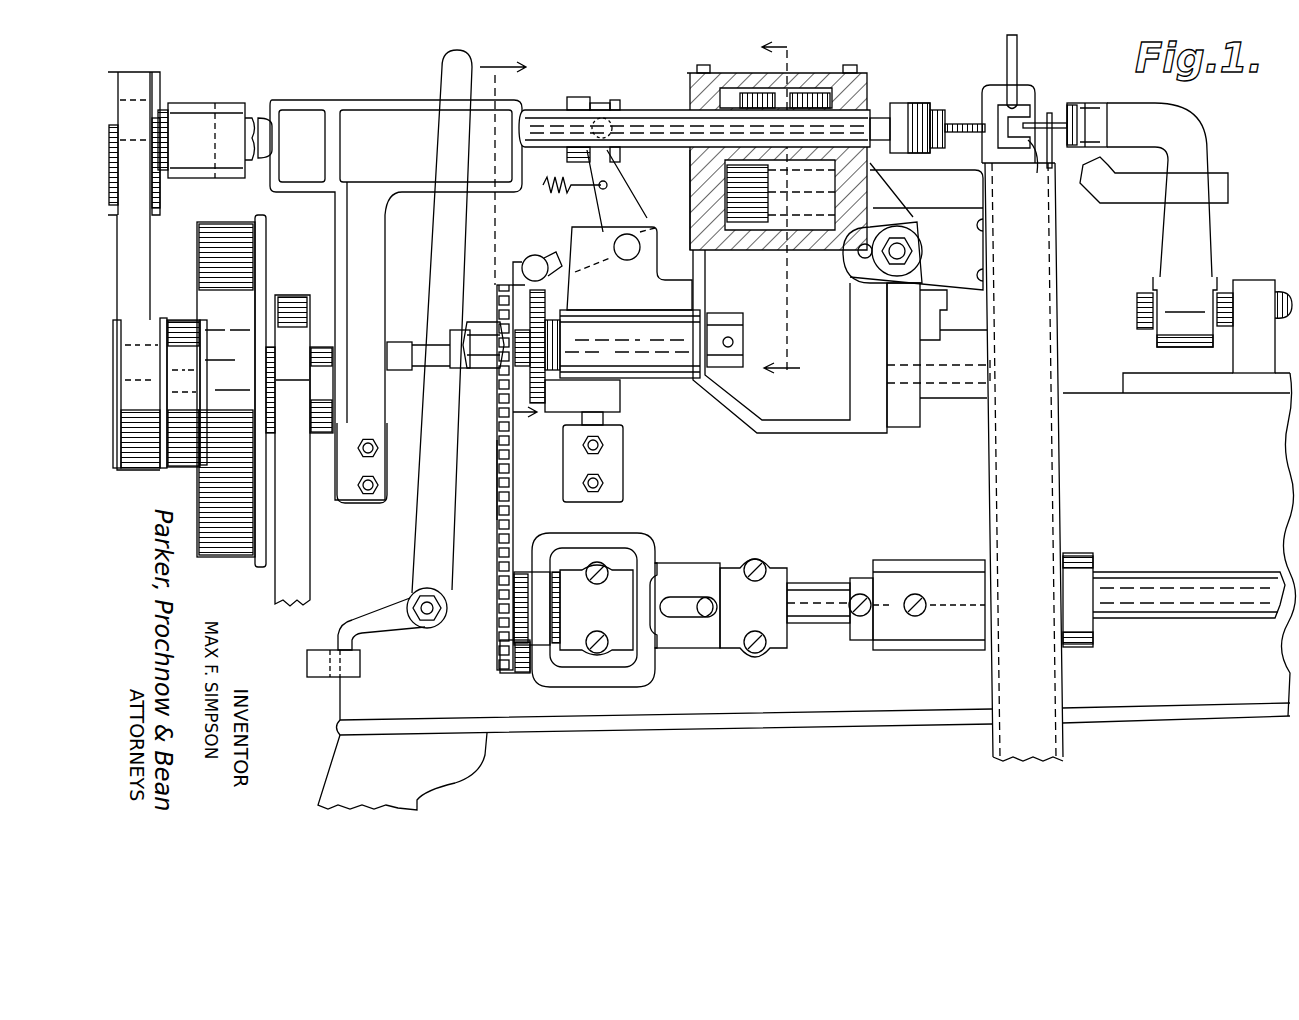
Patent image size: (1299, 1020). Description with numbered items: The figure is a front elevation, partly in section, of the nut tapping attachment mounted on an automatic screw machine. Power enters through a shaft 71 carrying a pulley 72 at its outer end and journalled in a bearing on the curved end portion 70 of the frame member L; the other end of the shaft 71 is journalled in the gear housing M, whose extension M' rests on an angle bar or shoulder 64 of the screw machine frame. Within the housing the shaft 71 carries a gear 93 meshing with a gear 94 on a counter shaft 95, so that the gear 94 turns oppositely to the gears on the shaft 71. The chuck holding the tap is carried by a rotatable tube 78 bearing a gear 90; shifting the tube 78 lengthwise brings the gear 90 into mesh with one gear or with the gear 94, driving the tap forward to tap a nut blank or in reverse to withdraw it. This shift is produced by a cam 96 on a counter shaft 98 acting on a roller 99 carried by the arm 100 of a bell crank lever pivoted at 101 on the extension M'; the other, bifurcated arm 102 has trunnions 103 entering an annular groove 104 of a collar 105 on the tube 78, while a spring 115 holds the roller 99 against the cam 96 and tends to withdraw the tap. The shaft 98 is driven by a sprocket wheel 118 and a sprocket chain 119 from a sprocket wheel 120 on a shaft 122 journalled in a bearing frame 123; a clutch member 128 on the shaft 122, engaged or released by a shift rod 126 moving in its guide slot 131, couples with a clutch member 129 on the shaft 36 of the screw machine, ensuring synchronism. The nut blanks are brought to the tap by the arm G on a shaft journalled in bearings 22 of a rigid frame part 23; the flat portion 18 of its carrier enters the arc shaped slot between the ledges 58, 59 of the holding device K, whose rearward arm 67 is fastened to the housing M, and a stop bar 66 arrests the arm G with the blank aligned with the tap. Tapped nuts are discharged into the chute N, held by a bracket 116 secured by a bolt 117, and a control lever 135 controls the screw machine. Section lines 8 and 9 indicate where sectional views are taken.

The pulley 72 is at (163, 82).
The curved end portion 70 is at (183, 110).
The section line 8- 8 is at (508, 239).
The section line 9- 9 is at (792, 201).
The shaft 71 is at (536, 124).
The collar 105 is at (580, 97).
The annular groove 104 is at (600, 103).
The pins or trunnions 103 is at (622, 112).
The rotatable tube or sleeve 78 is at (668, 110).
The gear 93 is at (736, 90).
The gear 90 is at (757, 92).
The gear 94 is at (752, 232).
The counter shaft 95 is at (692, 200).
The rearwardly extending arm 67 is at (953, 108).
The ledge 58 is at (1030, 118).
The flat bar or portion 18 is at (1052, 110).
The ledge 59 is at (1028, 169).
The stop bar 66 is at (1218, 176).
The bearings 22 is at (1262, 282).
The rigid part of the frame 23 is at (1140, 380).
The shaft 36 is at (1148, 578).
The bolt or screw 117 is at (900, 248).
The bracket 116 is at (913, 226).
The spring 115 is at (548, 192).
The arm 100 is at (570, 236).
The roller 99 is at (532, 256).
The arm 102 is at (620, 190).
The pivot 101 is at (636, 238).
The counter shaft 98 is at (745, 340).
The sprocket wheel 118 is at (502, 398).
The cam 96 is at (540, 410).
The angle bar or shoulder 64 is at (610, 441).
The sprocket chain 119 is at (499, 484).
The control lever 135 is at (389, 385).
The sprocket wheel 120 is at (503, 612).
The shift lever or rod 126 is at (705, 598).
The guide slot 131 is at (692, 600).
The shaft 122 is at (815, 585).
The clutch member 128 is at (882, 574).
The clutch member 129 is at (950, 566).
The bearing supporting member or frame 123 is at (675, 646).